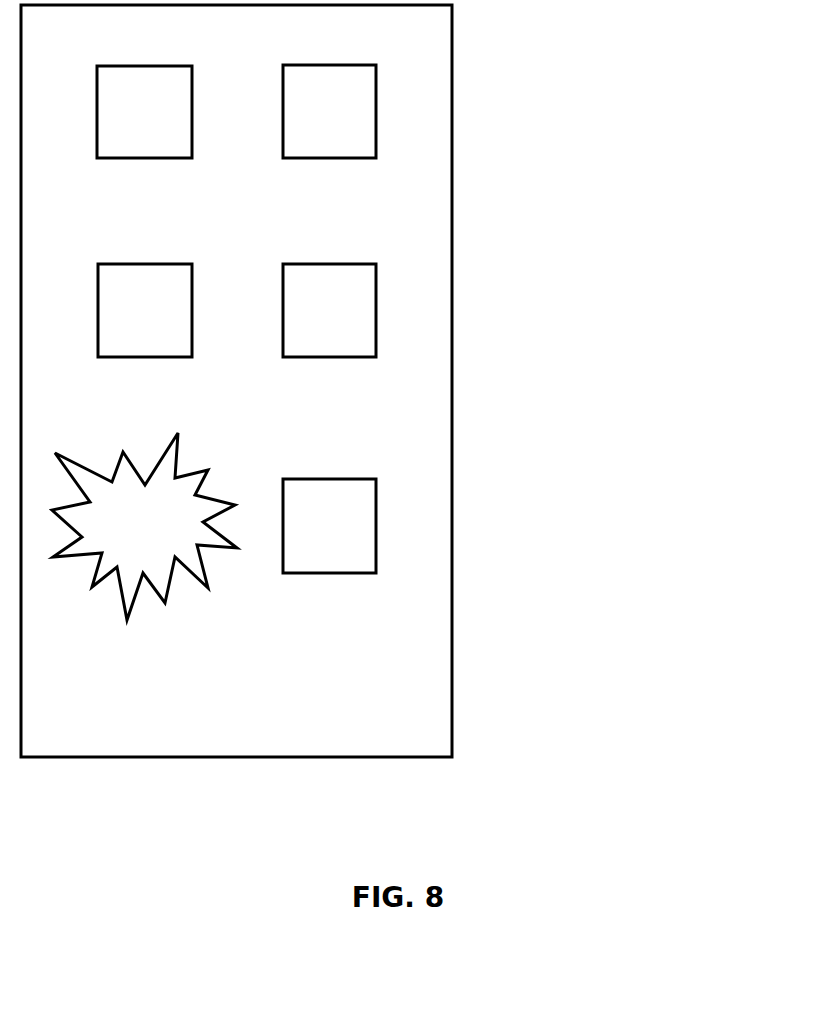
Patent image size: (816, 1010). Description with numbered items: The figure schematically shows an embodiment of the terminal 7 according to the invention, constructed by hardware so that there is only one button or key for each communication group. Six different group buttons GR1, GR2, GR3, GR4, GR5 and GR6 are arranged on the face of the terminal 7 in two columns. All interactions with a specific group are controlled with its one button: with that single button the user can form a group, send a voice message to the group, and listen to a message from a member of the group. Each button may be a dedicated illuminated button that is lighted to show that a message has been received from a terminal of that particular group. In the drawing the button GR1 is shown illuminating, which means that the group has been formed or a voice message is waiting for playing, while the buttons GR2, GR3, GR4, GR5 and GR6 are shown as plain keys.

The terminal 7 is at (361, 381).
The group button GR1 is at (144, 526).
The group button GR2 is at (329, 526).
The group button GR3 is at (145, 310).
The group button GR4 is at (329, 310).
The group button GR5 is at (144, 112).
The group button GR6 is at (329, 111).